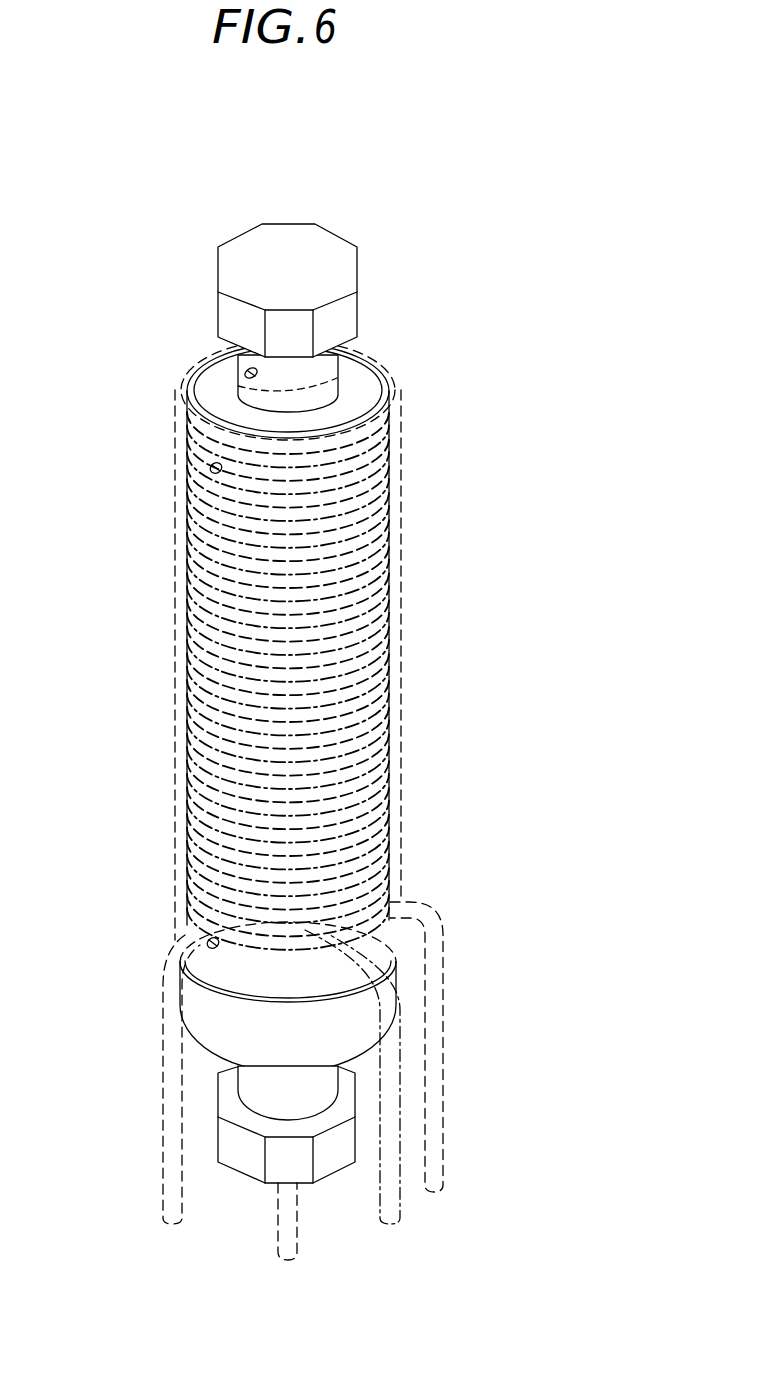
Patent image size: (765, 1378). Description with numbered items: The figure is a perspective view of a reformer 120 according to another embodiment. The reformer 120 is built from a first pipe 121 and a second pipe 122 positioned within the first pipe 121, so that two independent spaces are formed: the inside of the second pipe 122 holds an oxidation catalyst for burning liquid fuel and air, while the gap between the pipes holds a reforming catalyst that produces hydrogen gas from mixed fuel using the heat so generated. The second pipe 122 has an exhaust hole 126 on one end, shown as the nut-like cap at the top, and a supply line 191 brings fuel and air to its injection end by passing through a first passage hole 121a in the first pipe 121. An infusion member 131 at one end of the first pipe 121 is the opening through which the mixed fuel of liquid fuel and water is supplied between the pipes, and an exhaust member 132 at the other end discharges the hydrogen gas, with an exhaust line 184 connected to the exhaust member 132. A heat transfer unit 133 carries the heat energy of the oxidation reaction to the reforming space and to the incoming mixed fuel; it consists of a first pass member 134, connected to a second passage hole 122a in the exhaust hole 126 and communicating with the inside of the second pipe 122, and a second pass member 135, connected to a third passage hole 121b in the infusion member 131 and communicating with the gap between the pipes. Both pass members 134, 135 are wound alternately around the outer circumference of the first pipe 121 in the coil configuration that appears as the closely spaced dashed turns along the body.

The reformer 120 is at (466, 242).
The first pipe 121 is at (389, 708).
The first passage hole 121a is at (208, 944).
The third passage hole 121b is at (210, 468).
The second pipe 122 is at (303, 376).
The second passage hole 122a is at (245, 378).
The exhaust hole 126 is at (210, 273).
The infusion member 131 is at (180, 381).
The exhaust member 132 is at (238, 1184).
The heat transfer unit 133 is at (520, 553).
The first pass member 134 is at (356, 372).
The second pass member 135 is at (290, 550).
The exhaust line 184 is at (297, 1225).
The supply line 191 is at (162, 1066).